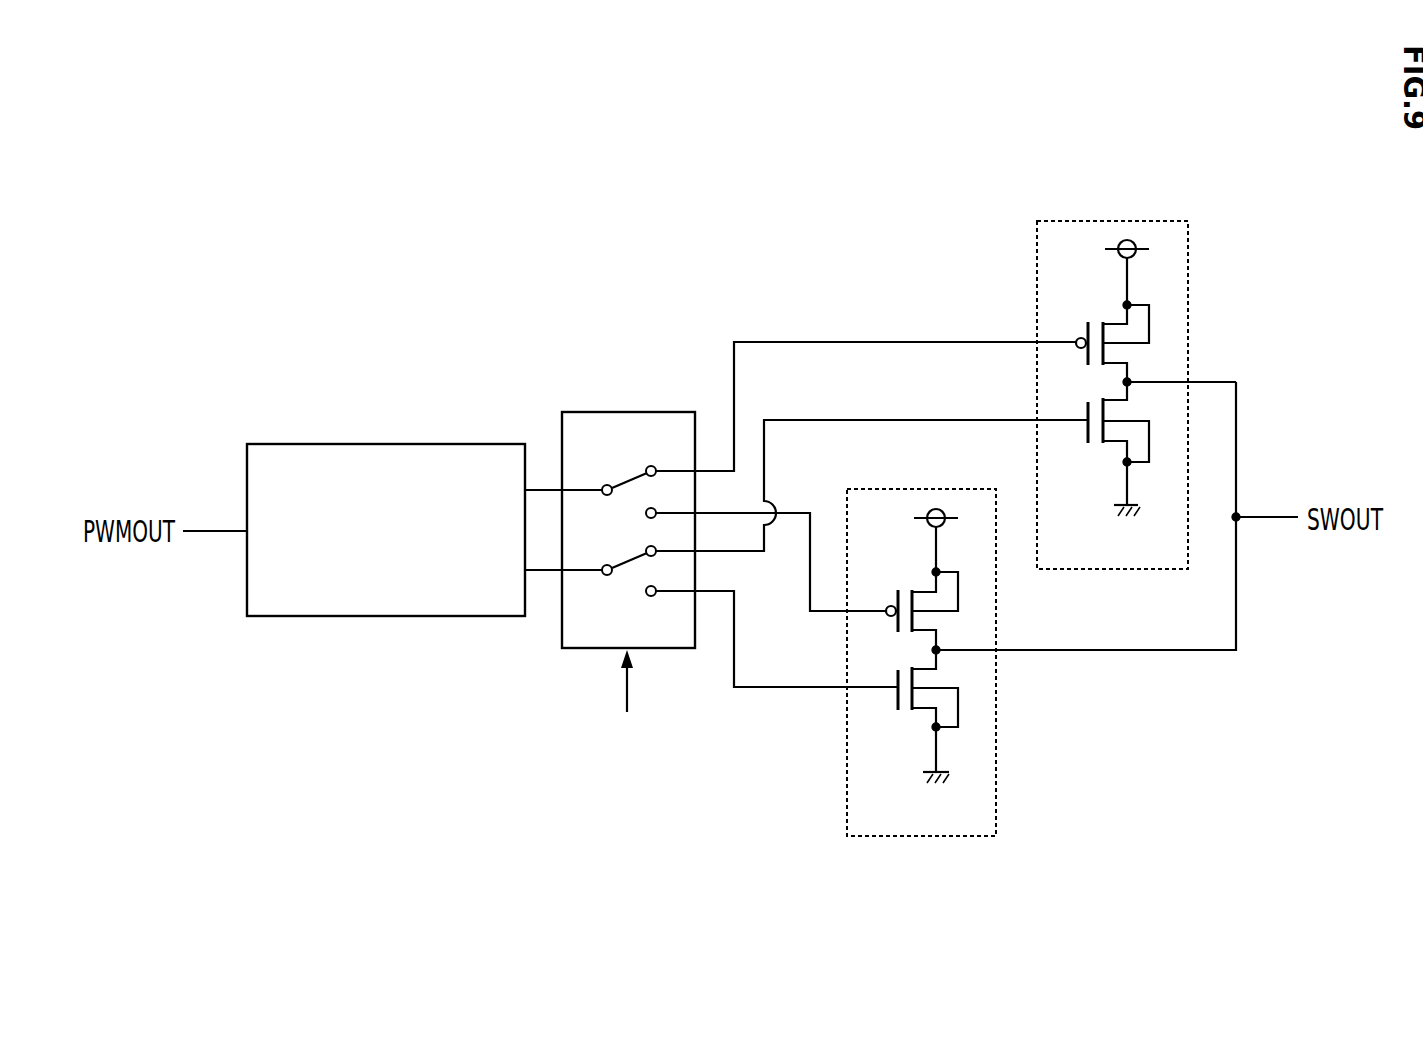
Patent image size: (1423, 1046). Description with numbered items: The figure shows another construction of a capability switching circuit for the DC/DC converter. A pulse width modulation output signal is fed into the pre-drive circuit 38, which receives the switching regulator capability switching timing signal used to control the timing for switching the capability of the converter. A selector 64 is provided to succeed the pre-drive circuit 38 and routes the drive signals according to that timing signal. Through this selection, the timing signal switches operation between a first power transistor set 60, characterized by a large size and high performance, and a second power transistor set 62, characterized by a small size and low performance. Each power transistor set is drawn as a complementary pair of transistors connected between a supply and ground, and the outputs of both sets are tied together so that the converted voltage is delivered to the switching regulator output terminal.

The pre-drive circuit 38 is at (387, 444).
The selector 64 is at (627, 412).
The first power transistor set 60 is at (1113, 221).
The second power transistor set 62 is at (920, 838).